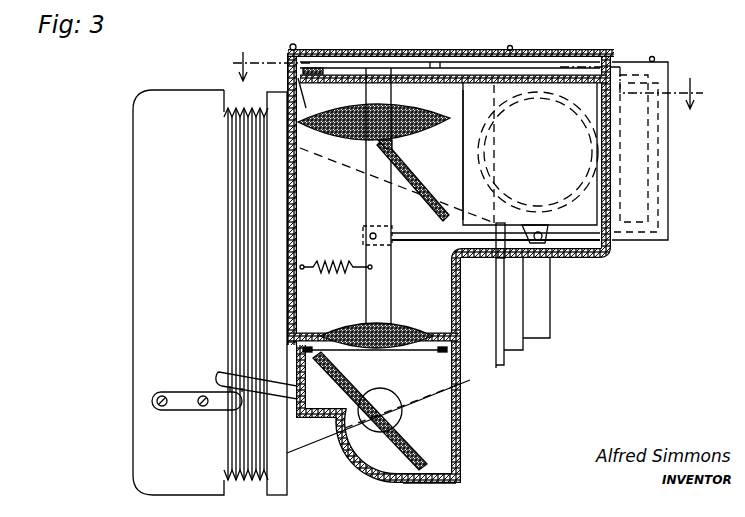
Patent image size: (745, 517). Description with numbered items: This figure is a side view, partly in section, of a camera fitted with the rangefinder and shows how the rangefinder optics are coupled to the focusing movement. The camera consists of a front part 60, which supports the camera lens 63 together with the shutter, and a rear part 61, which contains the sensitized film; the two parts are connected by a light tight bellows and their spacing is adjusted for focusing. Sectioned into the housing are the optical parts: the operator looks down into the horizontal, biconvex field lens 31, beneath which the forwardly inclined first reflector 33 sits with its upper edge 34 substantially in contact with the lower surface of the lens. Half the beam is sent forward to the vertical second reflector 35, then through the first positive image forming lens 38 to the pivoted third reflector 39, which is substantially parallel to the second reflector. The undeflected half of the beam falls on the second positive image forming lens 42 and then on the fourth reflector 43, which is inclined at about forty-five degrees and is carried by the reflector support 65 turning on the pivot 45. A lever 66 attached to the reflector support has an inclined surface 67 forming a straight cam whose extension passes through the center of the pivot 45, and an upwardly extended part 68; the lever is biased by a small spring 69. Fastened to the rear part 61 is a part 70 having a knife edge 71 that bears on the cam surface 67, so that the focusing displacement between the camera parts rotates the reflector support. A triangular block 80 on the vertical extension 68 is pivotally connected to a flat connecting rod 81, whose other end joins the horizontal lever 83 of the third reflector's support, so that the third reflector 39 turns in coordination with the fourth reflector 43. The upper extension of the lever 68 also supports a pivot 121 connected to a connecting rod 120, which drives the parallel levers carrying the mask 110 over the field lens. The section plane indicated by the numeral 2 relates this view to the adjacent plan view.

The section line 2- 2 is at (263, 66).
The field lens 31 is at (350, 112).
The first reflector 33 is at (418, 188).
The upper edge of first reflector 34 is at (388, 144).
The second reflector 35 is at (469, 163).
The first positive image forming lens 38 is at (580, 104).
The third reflector 39 is at (662, 140).
The second positive image forming lens 42 is at (398, 333).
The fourth reflector 43 is at (347, 385).
The pivot 45 is at (384, 406).
The front part 60 is at (606, 252).
The rear part 61 is at (135, 152).
The camera lens 63 is at (540, 327).
The reflector support 65 is at (402, 470).
The lever 66 is at (252, 375).
The inclined surface 67 is at (290, 452).
The upwardly extended part 68 is at (367, 195).
The spring 69 is at (350, 252).
The part 70 is at (182, 407).
The knife edge 71 is at (222, 383).
The triangular block 80 is at (386, 226).
The connecting rod 81 is at (440, 233).
The horizontal lever 83 is at (542, 234).
The mask 110 is at (313, 72).
The connecting rod 120 is at (427, 56).
The pivot 121 is at (385, 66).